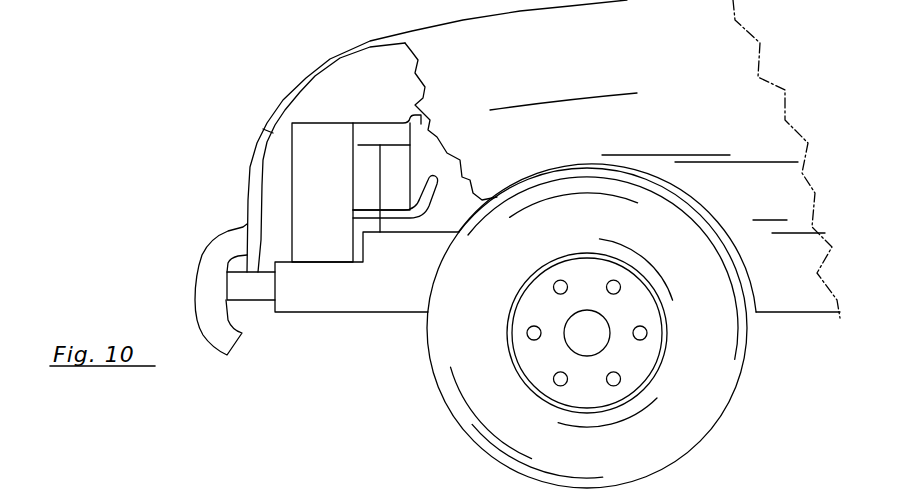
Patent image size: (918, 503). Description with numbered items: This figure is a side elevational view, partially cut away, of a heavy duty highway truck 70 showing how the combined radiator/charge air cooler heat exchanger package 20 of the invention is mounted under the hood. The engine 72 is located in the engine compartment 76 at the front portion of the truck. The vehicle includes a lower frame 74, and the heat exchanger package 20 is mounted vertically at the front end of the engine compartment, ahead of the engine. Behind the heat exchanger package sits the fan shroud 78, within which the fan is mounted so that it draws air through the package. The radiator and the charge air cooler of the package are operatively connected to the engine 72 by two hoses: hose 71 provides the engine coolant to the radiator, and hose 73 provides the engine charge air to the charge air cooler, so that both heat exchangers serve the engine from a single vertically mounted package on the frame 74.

The heavy duty highway truck 70 is at (122, 128).
The combined radiator/CAC heat exchanger package 20 is at (302, 133).
The engine 72 is at (418, 132).
The hose 73 is at (375, 132).
The fan shroud 78 is at (363, 172).
The engine compartment 76 is at (258, 199).
The lower frame 74 is at (345, 300).
The hose 71 is at (385, 217).